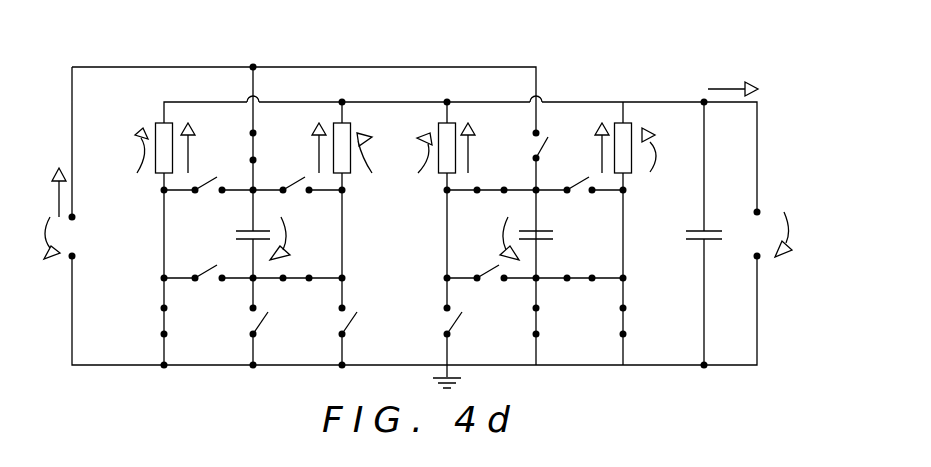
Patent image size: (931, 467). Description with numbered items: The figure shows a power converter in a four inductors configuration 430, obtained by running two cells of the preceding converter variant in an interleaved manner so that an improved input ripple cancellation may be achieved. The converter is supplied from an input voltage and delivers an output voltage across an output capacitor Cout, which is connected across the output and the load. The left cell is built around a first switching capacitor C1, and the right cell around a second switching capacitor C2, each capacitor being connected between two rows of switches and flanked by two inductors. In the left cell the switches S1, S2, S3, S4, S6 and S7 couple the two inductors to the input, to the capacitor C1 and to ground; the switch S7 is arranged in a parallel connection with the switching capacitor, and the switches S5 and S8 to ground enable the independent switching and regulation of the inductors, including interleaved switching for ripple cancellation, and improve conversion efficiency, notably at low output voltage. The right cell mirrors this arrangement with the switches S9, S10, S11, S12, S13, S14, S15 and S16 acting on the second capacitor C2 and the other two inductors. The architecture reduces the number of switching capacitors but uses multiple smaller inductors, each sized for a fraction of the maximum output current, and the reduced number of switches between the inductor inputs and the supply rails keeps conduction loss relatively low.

The four inductors configuration 430 is at (152, 37).
The switch S1 is at (241, 140).
The switch S2 is at (296, 195).
The switch S3 is at (296, 289).
The switch S4 is at (270, 321).
The switch S5 is at (359, 321).
The switch S6 is at (209, 195).
The switch S7 is at (209, 283).
The switch S8 is at (178, 321).
The switch S9 is at (546, 139).
The switch S10 is at (580, 195).
The switch S11 is at (580, 289).
The switch S12 is at (550, 321).
The switch S13 is at (637, 321).
The switch S14 is at (491, 201).
The switch S15 is at (491, 283).
The switch S16 is at (468, 321).
The capacitor C1 is at (238, 240).
The capacitor C2 is at (549, 240).
The output capacitor Cout is at (679, 238).